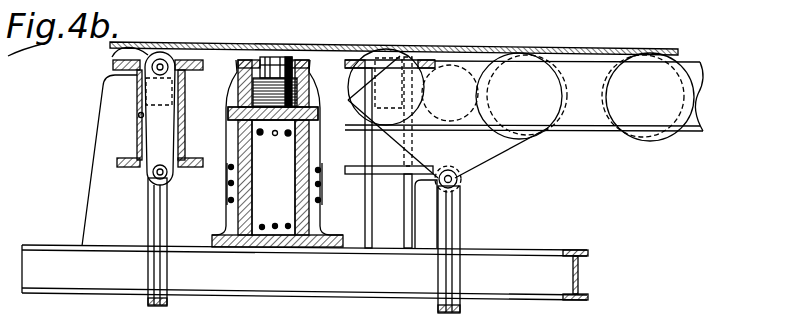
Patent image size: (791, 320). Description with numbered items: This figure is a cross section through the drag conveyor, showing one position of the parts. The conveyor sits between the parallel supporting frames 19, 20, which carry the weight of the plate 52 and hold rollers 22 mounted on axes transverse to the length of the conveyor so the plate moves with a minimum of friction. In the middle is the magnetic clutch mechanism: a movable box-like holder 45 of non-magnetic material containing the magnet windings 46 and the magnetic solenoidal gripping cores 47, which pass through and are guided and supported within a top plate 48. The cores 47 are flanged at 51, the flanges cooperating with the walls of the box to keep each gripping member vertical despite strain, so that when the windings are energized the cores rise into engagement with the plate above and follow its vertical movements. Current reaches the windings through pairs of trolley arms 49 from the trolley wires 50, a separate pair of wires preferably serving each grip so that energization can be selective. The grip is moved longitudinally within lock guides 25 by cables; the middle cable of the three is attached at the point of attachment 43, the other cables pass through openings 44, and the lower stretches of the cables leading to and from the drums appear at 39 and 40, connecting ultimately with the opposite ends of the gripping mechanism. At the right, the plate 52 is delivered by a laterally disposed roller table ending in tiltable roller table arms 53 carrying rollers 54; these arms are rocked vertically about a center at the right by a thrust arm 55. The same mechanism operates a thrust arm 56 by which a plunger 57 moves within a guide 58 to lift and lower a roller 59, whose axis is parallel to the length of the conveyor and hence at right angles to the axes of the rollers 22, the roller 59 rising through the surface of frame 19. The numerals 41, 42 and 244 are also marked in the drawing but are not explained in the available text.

The supporting frame 19 is at (138, 147).
The supporting frame 20 is at (413, 143).
The roller 22 is at (146, 90).
The lock guide 25 is at (308, 118).
The cable stretch 39 is at (288, 229).
The cable stretch 40 is at (275, 229).
The contact 41 is at (260, 135).
The contact 42 is at (275, 136).
The point of attachment 43 is at (273, 177).
The opening 44 is at (313, 127).
The box-like holder 45 is at (300, 92).
The magnet winding 46 is at (240, 83).
The magnetic solenoidal gripping core 47 is at (267, 63).
The top plate 48 is at (288, 70).
The trolley arm 49 is at (320, 147).
The trolley wire 50 is at (229, 186).
The flange 51 is at (300, 64).
The plate 52 is at (466, 60).
The tiltable roller table arm 53 is at (546, 130).
The roller 54 is at (540, 60).
The thrust arm 55 is at (458, 210).
The thrust arm 56 is at (166, 272).
The plunger 57 is at (155, 133).
The guide 58 is at (139, 115).
The roller 59 is at (113, 55).
The wall 244 is at (307, 218).